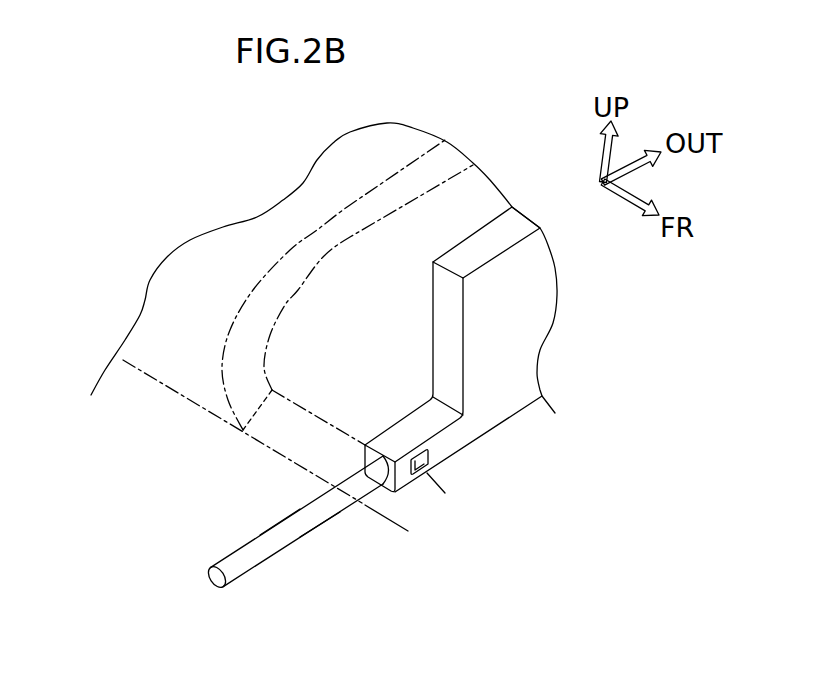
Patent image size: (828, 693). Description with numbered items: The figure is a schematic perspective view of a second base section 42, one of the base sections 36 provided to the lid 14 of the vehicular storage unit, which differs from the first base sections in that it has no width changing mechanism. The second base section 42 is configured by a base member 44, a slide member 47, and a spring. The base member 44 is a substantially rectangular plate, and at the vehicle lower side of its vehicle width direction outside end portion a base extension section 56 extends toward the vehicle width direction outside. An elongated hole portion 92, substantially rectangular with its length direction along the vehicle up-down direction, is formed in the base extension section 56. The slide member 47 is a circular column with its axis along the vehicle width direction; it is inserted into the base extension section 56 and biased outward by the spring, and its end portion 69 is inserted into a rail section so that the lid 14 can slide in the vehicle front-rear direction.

The lid 14 is at (188, 429).
The base member 44 is at (530, 293).
The base extension section 56 is at (456, 442).
The elongated hole portion 92 is at (437, 468).
The second base section 42 is at (195, 577).
The base section 36 is at (218, 523).
The end portion 69 is at (227, 560).
The slide member 47 is at (333, 517).